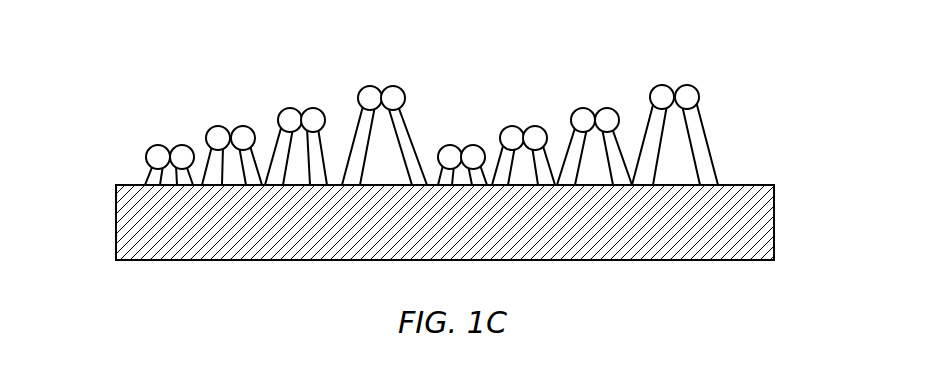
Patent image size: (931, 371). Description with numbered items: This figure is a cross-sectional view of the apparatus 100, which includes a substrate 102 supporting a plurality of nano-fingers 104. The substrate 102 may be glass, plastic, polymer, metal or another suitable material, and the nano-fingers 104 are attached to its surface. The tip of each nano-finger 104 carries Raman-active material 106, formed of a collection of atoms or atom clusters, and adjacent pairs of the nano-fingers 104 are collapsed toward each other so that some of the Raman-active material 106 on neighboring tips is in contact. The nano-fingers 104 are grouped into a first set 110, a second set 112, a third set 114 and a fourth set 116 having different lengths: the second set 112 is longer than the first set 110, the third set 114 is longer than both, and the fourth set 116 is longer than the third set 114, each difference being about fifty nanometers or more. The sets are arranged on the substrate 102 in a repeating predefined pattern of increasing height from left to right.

The apparatus 100 is at (161, 28).
The substrate 102 is at (650, 260).
The nano-fingers 104 is at (420, 128).
The Raman-active material 106 is at (405, 87).
The first set of nano-fingers 110 is at (151, 122).
The second set of nano-fingers 112 is at (209, 102).
The third set of nano-fingers 114 is at (289, 81).
The fourth set of nano-fingers 116 is at (361, 56).